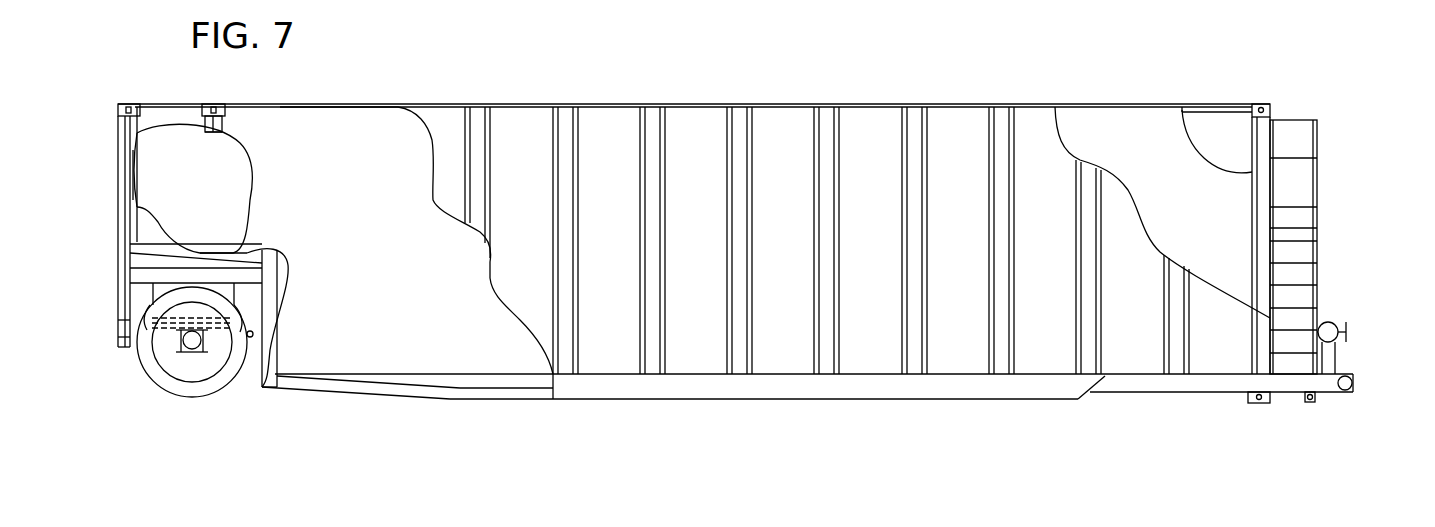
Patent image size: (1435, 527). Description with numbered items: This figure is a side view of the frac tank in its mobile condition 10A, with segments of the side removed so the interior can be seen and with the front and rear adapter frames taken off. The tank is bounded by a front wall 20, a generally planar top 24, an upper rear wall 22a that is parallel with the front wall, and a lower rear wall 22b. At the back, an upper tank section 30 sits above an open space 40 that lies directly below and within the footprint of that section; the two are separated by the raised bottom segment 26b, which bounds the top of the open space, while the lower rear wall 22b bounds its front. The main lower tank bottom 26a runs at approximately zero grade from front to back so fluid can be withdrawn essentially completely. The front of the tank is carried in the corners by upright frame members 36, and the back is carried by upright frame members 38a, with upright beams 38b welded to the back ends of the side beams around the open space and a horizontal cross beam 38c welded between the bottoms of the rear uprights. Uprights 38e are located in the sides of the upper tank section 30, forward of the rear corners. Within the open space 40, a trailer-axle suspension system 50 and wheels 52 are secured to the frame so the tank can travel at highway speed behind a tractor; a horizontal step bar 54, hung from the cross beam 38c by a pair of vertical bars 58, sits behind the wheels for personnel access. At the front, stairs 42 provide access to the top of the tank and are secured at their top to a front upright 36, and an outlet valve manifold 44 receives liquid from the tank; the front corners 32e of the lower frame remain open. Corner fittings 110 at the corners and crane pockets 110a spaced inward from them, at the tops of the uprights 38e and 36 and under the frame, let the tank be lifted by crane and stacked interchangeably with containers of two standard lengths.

The mobile condition 10A is at (777, 98).
The corner fittings 110 is at (132, 104).
The crane pockets 110a is at (210, 104).
The front corners 32e is at (1354, 8).
The top 24 is at (342, 111).
The upper tank section 30 is at (235, 134).
The uprights 38e is at (350, 95).
The upper rear wall 22a is at (137, 150).
The upright frame members 38a is at (137, 183).
The raised bottom segment 26b is at (225, 248).
The horizontal cross beam 38c is at (118, 243).
The lower rear wall 22b is at (278, 288).
The upright beams 38b is at (271, 340).
The lower tank bottom 26a is at (424, 376).
The wheels 52 is at (216, 396).
The trailer-axle suspension system 50 is at (172, 348).
The open space 40 is at (252, 368).
The vertical bars 58 is at (118, 306).
The horizontal step bar 54 is at (118, 341).
The front wall 20 is at (1252, 200).
The upright frame members 36 is at (1260, 237).
The stairs 42 is at (1317, 240).
The outlet valve manifold 44 is at (1332, 322).